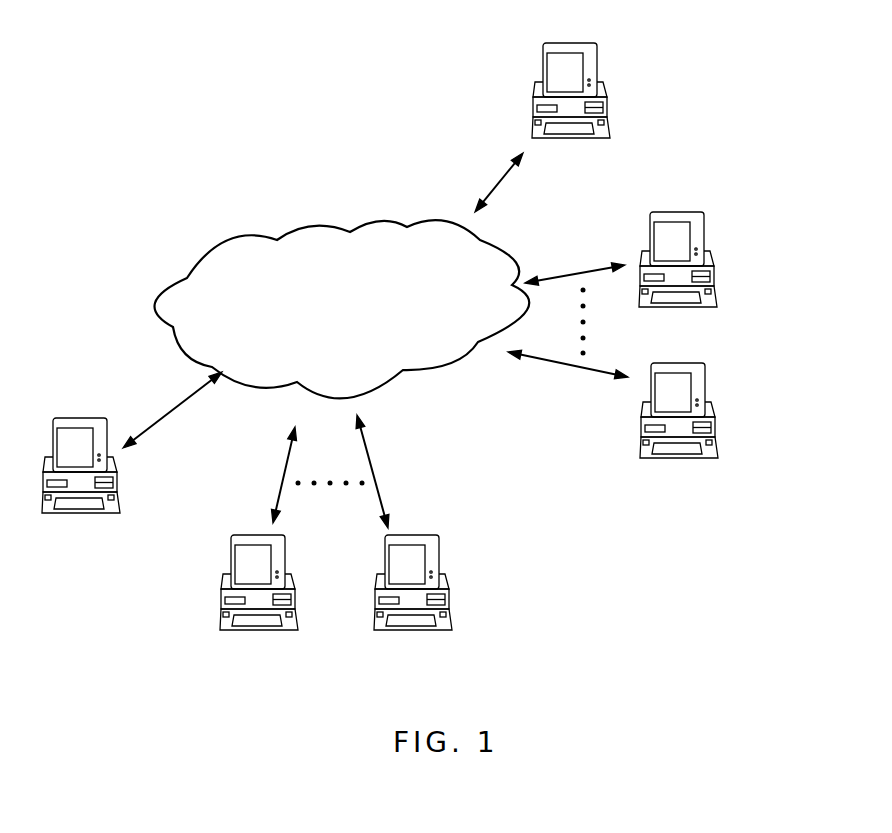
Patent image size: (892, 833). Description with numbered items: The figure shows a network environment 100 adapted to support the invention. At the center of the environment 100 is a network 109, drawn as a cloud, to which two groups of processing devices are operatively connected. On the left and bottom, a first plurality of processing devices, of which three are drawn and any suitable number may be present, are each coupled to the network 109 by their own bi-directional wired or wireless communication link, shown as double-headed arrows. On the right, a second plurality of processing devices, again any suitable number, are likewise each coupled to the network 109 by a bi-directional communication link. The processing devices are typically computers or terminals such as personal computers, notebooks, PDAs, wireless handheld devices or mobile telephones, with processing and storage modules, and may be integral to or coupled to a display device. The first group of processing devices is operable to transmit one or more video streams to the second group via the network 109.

The network environment 100 is at (205, 46).
The network 109 is at (242, 233).